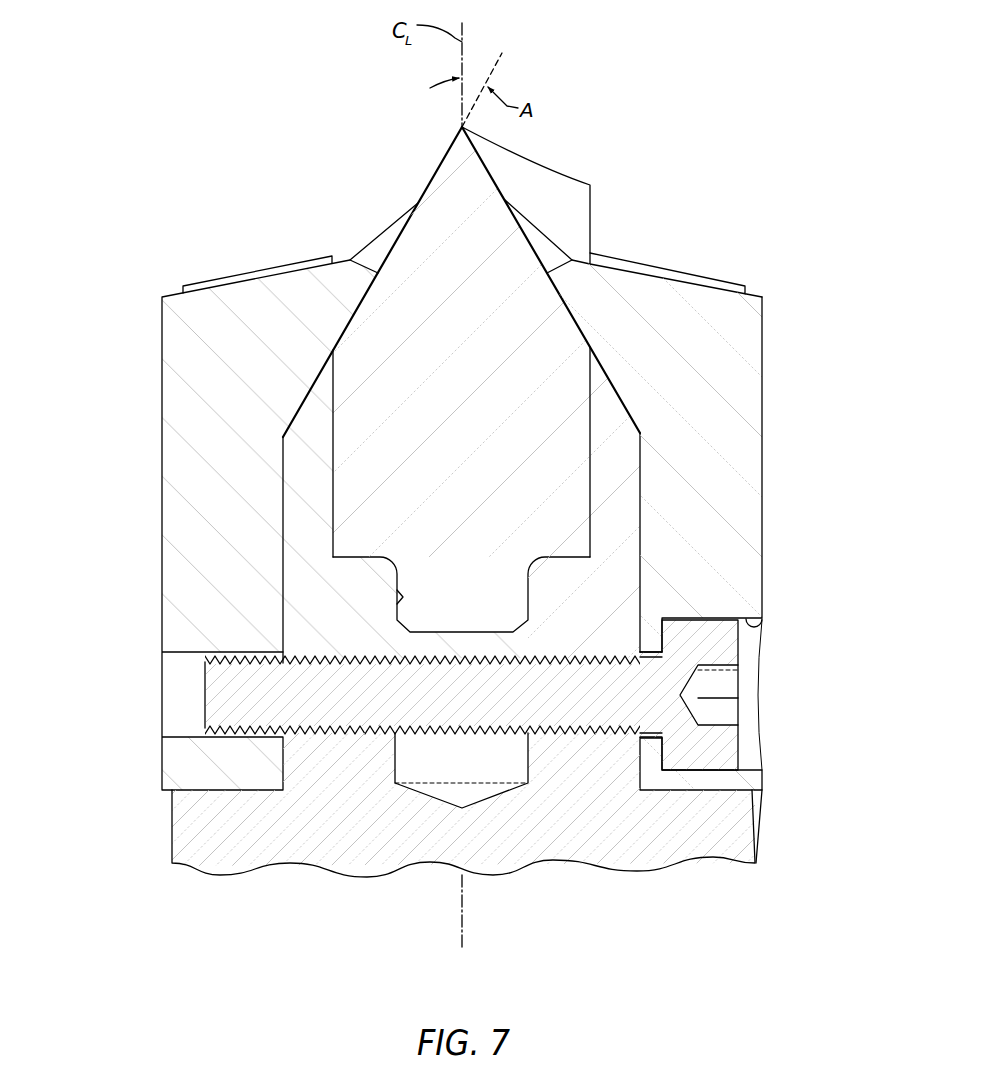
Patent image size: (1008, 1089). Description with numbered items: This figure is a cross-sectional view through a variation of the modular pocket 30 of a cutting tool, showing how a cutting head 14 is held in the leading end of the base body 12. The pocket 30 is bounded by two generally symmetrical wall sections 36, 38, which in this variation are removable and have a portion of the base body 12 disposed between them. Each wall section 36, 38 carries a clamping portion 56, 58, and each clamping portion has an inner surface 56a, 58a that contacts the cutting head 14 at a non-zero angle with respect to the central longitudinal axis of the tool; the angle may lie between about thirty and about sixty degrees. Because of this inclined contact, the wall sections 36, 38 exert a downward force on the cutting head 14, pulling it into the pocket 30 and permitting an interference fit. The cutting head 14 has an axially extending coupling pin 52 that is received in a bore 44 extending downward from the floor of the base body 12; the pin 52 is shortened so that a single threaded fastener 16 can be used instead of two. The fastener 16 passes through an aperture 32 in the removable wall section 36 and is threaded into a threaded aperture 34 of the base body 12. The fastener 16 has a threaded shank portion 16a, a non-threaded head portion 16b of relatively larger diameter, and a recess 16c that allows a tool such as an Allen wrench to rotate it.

The base body 12 is at (147, 830).
The cutting head 14 is at (424, 171).
The threaded fastener 16 is at (514, 772).
The threaded shank portion 16a is at (587, 697).
The non-threaded head portion 16b is at (717, 743).
The recess 16c is at (730, 673).
The modular pocket 30 is at (592, 332).
The aperture 32 is at (763, 631).
The threaded aperture 34 is at (360, 668).
The wall section 36 is at (781, 397).
The wall section 38 is at (144, 376).
The bore 44 is at (392, 597).
The coupling pin 52 is at (512, 613).
The clamping portion 56 is at (618, 307).
The inner surface 56a is at (567, 322).
The clamping portion 58 is at (322, 303).
The inner surface 58a is at (350, 323).